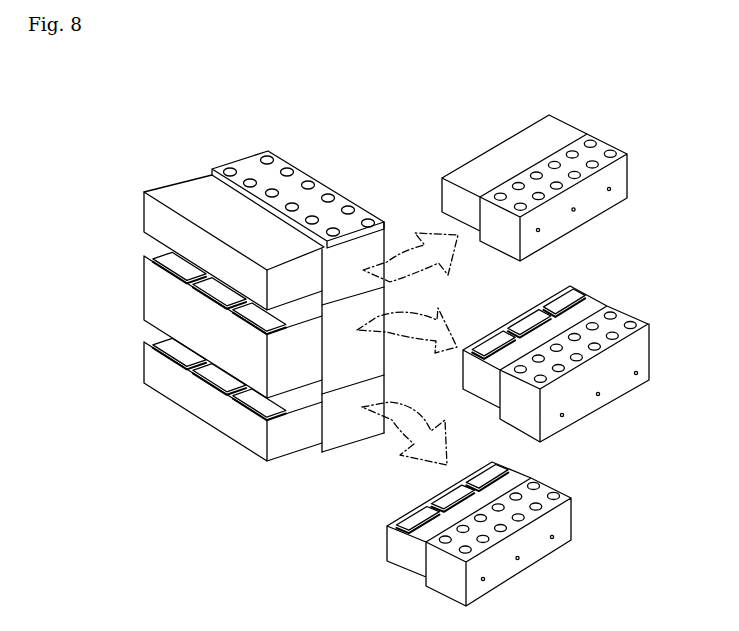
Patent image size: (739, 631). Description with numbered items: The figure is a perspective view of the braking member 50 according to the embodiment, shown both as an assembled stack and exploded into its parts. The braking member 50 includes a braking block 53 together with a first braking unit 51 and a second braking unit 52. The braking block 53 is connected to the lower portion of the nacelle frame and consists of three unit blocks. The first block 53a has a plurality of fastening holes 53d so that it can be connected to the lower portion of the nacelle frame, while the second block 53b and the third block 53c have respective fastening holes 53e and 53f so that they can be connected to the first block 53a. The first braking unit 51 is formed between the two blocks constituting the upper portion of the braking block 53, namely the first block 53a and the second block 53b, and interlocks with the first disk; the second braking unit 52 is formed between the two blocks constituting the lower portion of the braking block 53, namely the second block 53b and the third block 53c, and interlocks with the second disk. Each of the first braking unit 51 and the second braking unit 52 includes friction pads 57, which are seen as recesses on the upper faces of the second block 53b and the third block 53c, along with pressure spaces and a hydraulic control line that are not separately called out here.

The braking member 50 is at (147, 131).
The first braking unit 51 is at (133, 242).
The second braking unit 52 is at (133, 325).
The braking block 53 is at (312, 160).
The first block 53a is at (618, 175).
The second block 53b is at (637, 358).
The third block 53c is at (557, 523).
The fastening holes 53d is at (592, 141).
The fastening holes 53e is at (612, 308).
The fastening holes 53f is at (558, 498).
The friction pads 57 is at (572, 305).